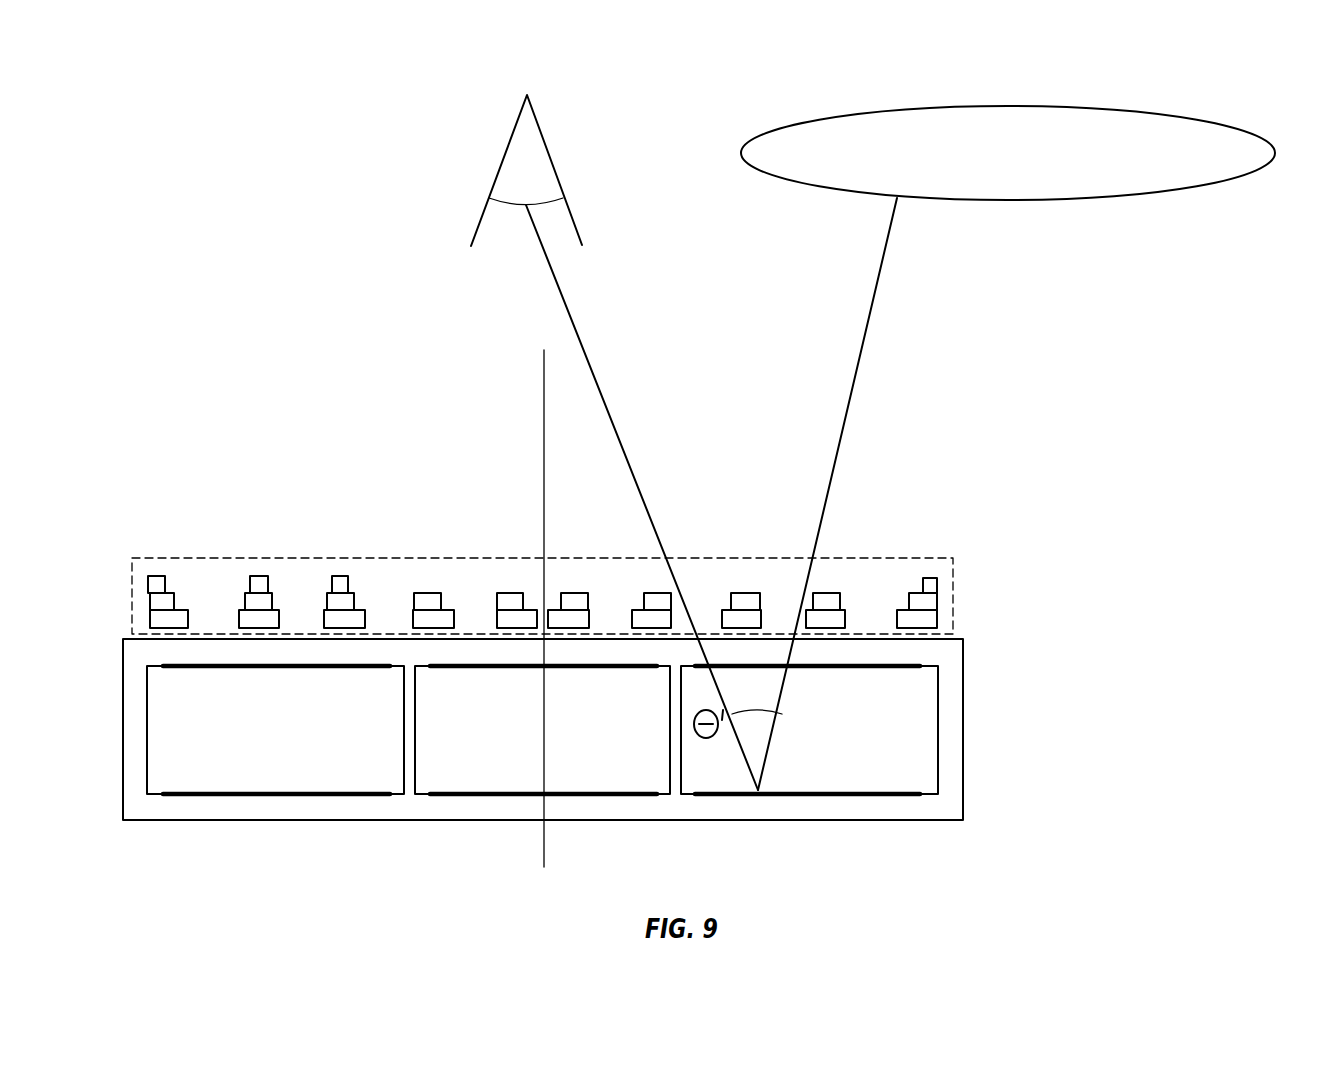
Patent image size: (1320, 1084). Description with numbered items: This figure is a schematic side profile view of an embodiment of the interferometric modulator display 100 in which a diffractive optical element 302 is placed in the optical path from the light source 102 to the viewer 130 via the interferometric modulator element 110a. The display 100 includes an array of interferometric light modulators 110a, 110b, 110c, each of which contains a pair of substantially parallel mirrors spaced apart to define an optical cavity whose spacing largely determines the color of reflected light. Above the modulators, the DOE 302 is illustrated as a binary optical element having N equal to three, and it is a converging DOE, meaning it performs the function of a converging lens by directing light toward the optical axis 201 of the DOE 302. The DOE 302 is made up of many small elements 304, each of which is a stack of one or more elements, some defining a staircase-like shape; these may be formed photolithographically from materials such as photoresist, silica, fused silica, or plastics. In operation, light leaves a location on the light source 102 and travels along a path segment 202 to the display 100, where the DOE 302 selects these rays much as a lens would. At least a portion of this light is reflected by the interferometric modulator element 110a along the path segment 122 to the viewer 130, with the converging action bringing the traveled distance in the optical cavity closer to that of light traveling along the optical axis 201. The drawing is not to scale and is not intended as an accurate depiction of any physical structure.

The interferometric modulator display 100 is at (386, 820).
The light source 102 is at (1175, 115).
The interferometric light modulator 110a is at (697, 665).
The interferometric light modulator 110b is at (424, 665).
The interferometric light modulator 110c is at (156, 665).
The path segment 122 is at (567, 307).
The viewer 130 is at (502, 159).
The optical axis 201 is at (543, 423).
The path segment 202 is at (872, 327).
The diffractive optical element 302 is at (953, 588).
The elements 304 is at (748, 593).